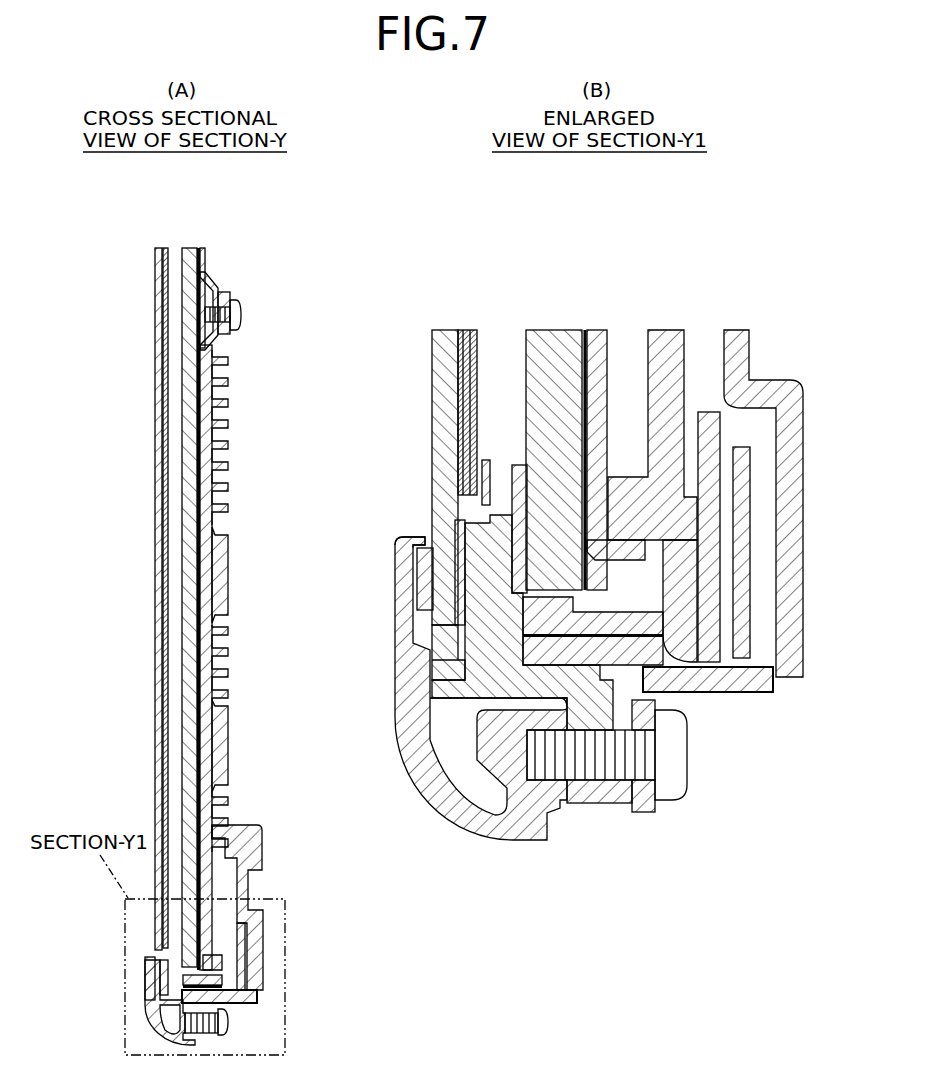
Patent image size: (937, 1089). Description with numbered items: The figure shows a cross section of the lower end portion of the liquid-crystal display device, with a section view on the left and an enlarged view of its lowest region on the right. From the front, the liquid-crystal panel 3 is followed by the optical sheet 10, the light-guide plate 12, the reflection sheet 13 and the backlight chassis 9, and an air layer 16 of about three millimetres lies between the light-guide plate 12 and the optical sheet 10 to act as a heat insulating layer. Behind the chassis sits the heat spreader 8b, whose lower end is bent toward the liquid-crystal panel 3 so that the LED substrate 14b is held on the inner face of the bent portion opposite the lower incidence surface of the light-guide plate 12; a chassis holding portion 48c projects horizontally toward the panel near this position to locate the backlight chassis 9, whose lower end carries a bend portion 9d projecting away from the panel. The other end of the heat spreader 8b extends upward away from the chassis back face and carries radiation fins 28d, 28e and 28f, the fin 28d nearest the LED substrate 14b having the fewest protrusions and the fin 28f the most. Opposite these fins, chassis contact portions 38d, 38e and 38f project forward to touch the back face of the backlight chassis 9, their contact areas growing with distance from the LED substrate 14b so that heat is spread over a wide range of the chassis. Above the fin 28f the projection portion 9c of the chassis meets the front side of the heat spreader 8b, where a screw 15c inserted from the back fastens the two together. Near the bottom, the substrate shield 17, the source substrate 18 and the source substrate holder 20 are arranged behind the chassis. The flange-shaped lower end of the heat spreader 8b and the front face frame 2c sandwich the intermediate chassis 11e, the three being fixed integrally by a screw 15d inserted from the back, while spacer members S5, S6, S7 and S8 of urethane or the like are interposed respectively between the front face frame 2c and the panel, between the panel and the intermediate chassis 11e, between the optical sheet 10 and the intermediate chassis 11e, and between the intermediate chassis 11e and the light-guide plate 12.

The liquid-crystal panel 3 is at (157, 452).
The optical sheet 10 is at (162, 302).
The air layer 16 is at (170, 248).
The light-guide plate 12 is at (190, 248).
The backlight chassis 9 is at (206, 735).
The projection portion 9c is at (199, 335).
The bend portion 9d is at (215, 955).
The reflection sheet 13 is at (213, 285).
The screw 15c is at (241, 317).
The screw 15d is at (228, 1025).
The radiation fin 28f is at (228, 410).
The radiation fin 28e is at (228, 655).
The radiation fin 28d is at (228, 800).
The chassis contact portion 38f is at (200, 410).
The chassis contact portion 38e is at (200, 655).
The chassis contact portion 38d is at (200, 800).
The heat spreader 8b is at (230, 571).
The substrate shield 17 is at (263, 845).
The source substrate 18 is at (246, 975).
The LED substrate 14b is at (210, 975).
The source substrate holder 20 is at (240, 1000).
The intermediate chassis 11e is at (150, 995).
The front face frame 2c is at (142, 1025).
The chassis holding portion 48c is at (630, 480).
The spacer member S5 is at (420, 565).
The spacer member S6 is at (462, 595).
The spacer member S7 is at (460, 480).
The spacer member S8 is at (510, 518).